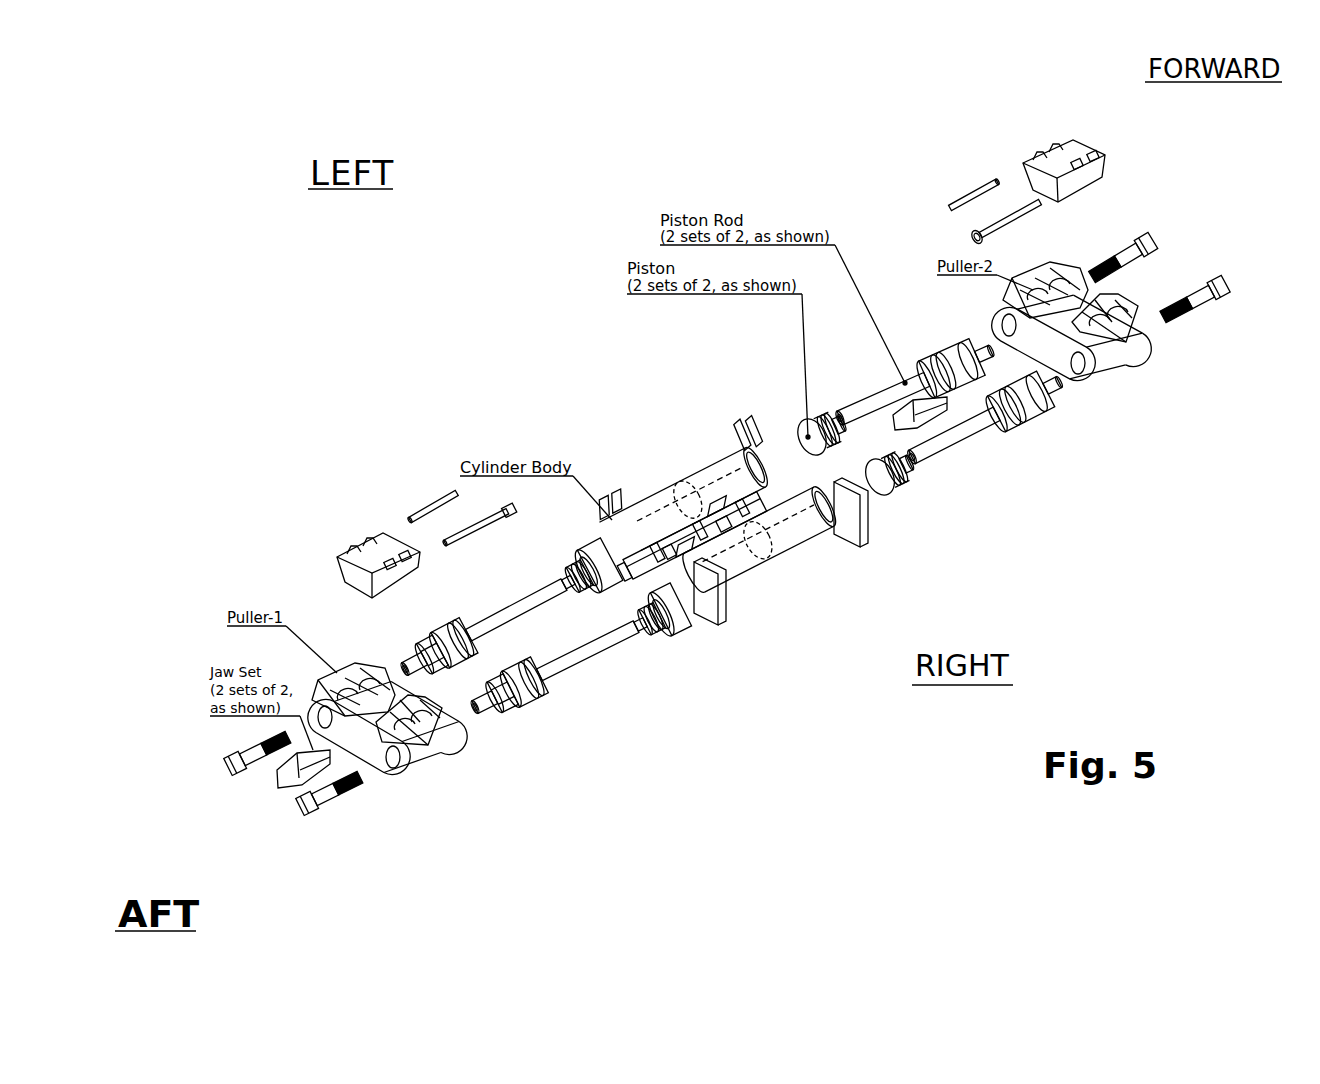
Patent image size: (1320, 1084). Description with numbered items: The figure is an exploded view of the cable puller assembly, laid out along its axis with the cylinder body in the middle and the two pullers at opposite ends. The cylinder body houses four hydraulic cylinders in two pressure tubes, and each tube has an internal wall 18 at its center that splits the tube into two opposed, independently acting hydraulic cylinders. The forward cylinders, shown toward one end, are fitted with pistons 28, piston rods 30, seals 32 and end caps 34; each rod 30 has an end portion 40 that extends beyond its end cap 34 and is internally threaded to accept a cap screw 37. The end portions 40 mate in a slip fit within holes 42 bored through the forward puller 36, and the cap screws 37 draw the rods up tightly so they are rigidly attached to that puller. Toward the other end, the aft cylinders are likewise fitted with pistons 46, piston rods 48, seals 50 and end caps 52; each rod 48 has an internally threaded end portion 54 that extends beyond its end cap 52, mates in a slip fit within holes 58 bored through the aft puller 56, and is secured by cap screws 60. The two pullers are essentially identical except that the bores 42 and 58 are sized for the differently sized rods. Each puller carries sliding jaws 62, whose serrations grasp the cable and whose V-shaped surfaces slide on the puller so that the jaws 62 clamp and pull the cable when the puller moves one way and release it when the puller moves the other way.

The internal wall 18 is at (680, 483).
The piston 28 is at (818, 412).
The piston rod 30 is at (874, 396).
The seal 32 is at (917, 345).
The end cap 34 is at (943, 332).
The forward puller 36 is at (1098, 326).
The cap screw 37 is at (813, 369).
The end portion 40 is at (972, 347).
The hole 42 is at (808, 363).
The piston 46 is at (567, 560).
The piston rod 48 is at (503, 600).
The seal 50 is at (438, 630).
The end cap 52 is at (418, 638).
The end portion 54 is at (483, 718).
The aft puller 56 is at (433, 770).
The hole 58 is at (393, 768).
The cap screw 60 is at (327, 803).
The sliding jaw 62 is at (287, 775).